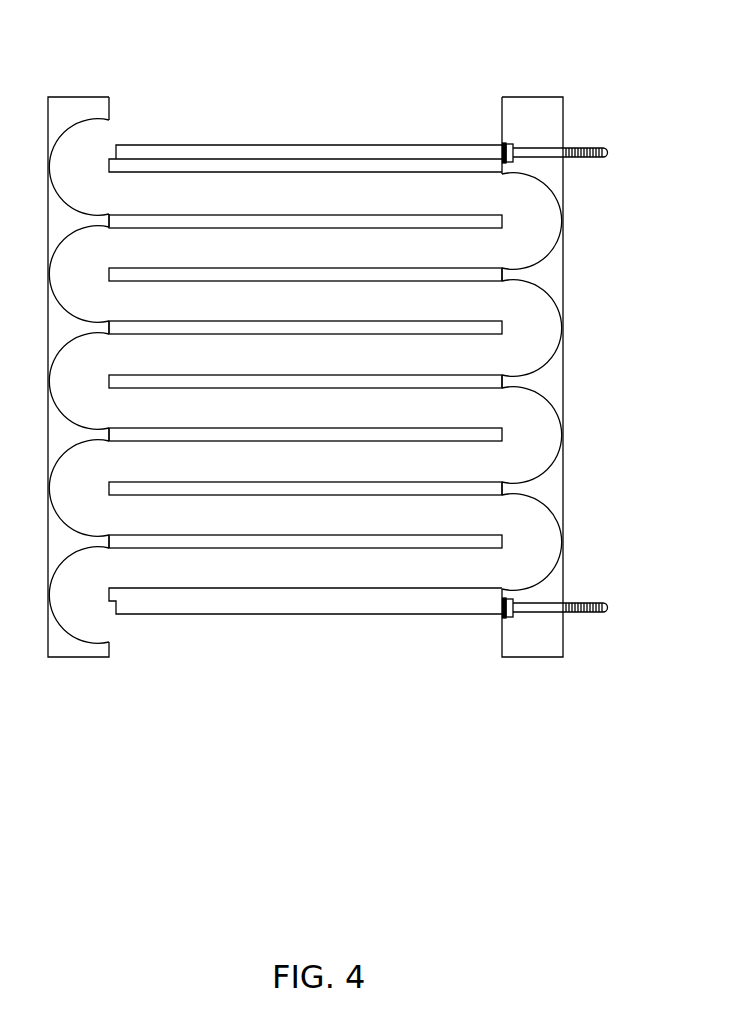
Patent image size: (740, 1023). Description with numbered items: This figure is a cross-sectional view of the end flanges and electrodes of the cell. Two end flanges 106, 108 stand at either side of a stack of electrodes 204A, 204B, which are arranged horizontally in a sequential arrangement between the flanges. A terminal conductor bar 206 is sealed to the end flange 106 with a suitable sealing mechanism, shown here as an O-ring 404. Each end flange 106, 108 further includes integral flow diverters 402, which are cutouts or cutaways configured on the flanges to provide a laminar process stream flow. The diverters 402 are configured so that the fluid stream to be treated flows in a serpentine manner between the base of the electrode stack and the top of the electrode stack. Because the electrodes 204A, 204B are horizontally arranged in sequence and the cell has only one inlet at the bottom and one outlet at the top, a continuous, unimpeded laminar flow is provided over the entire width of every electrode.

The end flange 108 is at (76, 112).
The end flange 106 is at (528, 97).
The terminal conductor bar 206 is at (260, 146).
The electrode 204A is at (166, 172).
The electrode 204B is at (440, 374).
The flow diverter 402 is at (520, 232).
The O-ring 404 is at (510, 143).